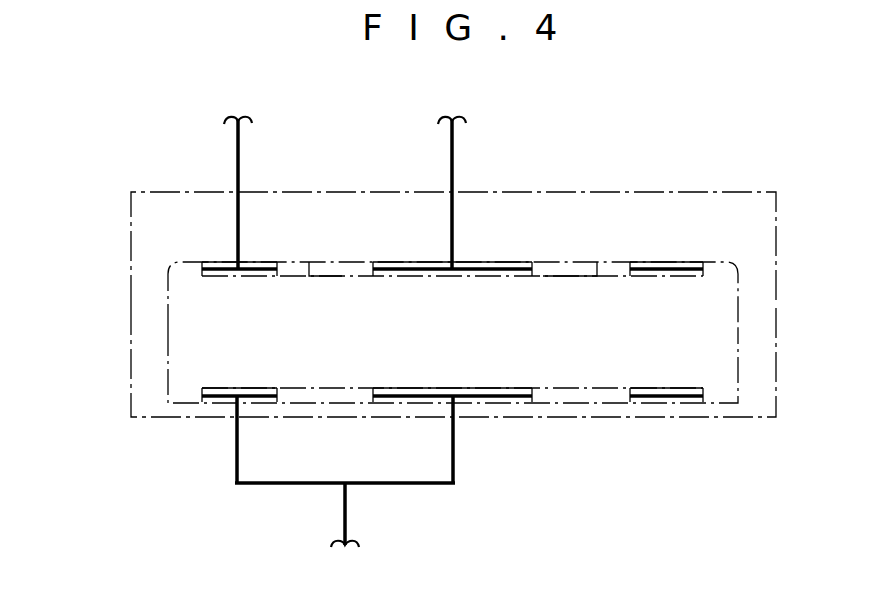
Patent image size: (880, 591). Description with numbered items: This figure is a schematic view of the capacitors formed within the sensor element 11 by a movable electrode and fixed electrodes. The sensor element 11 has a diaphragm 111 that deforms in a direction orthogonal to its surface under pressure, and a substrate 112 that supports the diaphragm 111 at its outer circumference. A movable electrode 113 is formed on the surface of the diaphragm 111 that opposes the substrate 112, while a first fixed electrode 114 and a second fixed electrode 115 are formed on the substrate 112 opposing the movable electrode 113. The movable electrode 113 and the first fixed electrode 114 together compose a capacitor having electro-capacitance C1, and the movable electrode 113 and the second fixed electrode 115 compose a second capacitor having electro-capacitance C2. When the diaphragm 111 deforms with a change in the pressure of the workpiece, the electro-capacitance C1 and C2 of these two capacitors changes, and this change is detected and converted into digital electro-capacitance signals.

The sensor element 11 is at (132, 108).
The diaphragm 111 is at (598, 418).
The substrate 112 is at (618, 198).
The movable electrode 113 is at (565, 396).
The first fixed electrode 114 is at (565, 262).
The second fixed electrode 115 is at (258, 262).
The electro-capacitance C1 is at (486, 338).
The electro-capacitance C2 is at (218, 340).